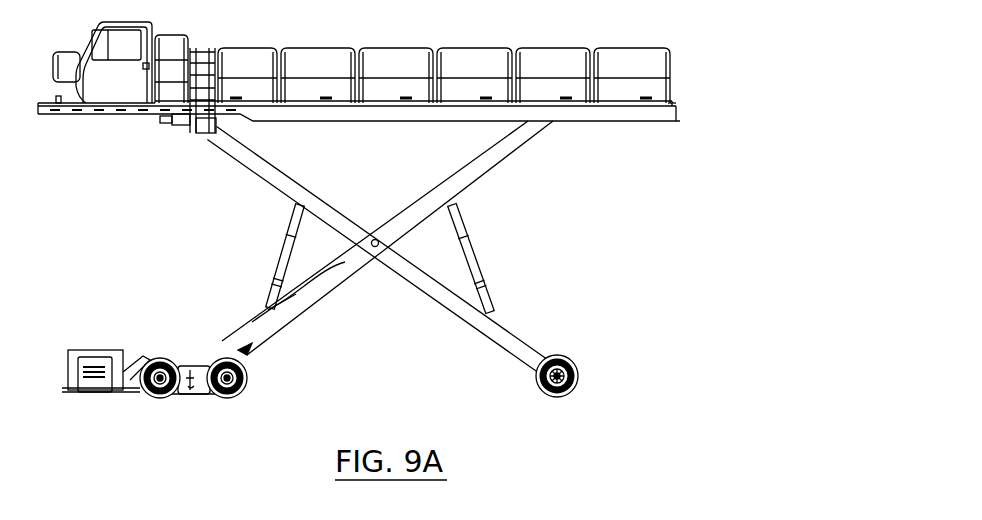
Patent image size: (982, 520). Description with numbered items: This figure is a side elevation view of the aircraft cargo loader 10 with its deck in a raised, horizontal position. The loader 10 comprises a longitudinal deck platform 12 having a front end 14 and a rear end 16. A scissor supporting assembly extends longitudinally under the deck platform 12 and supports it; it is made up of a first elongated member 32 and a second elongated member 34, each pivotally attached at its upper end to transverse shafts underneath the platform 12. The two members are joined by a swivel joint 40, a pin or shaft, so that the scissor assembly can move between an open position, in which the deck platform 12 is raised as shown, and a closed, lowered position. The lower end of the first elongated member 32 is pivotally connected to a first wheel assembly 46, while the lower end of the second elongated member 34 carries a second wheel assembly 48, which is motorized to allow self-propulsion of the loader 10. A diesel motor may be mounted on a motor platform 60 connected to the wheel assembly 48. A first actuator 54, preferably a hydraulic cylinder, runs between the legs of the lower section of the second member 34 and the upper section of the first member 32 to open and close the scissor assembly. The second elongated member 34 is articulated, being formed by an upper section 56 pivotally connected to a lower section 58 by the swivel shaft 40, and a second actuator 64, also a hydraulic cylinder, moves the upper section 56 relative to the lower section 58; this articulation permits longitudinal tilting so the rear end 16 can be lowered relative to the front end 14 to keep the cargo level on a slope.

The aircraft cargo loader 10 is at (735, 68).
The deck platform 12 is at (619, 119).
The front end 14 is at (55, 114).
The rear end 16 is at (678, 118).
The first elongated member 32 is at (460, 307).
The second elongated member 34 is at (355, 270).
The swivel joint 40 is at (377, 238).
The first wheel assembly 46 is at (572, 393).
The second wheel assembly 48 is at (191, 407).
The first actuator 54 is at (283, 236).
The upper section 56 is at (484, 168).
The lower section 58 is at (240, 326).
The motor platform 60 is at (97, 392).
The second actuator 64 is at (480, 258).